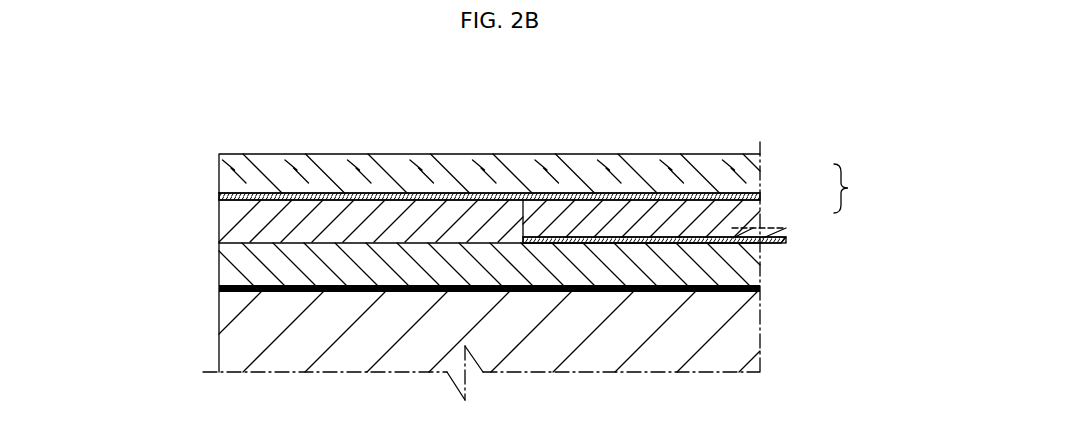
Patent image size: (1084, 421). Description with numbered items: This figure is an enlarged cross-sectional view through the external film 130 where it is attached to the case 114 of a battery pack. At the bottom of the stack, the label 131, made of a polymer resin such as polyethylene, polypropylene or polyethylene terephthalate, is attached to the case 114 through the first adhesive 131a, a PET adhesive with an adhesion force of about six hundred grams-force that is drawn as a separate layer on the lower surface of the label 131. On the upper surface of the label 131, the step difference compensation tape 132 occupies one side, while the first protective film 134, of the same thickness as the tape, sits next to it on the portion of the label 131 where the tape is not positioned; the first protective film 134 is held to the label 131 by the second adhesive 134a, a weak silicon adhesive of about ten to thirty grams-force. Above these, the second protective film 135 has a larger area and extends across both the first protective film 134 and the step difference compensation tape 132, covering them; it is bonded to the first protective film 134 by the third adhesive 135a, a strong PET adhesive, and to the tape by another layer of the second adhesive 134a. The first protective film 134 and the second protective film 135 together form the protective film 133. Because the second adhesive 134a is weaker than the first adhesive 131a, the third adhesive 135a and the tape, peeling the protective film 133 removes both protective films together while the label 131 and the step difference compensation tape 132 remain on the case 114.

The external film 130 is at (446, 255).
The case 114 is at (228, 337).
The label 131 is at (228, 261).
The first adhesive 131a is at (228, 289).
The step difference compensation tape 132 is at (228, 215).
The protective film 133 is at (863, 188).
The first protective film 134 is at (795, 210).
The second adhesive 134a is at (377, 198).
The second protective film 135 is at (795, 170).
The third adhesive 135a is at (602, 194).